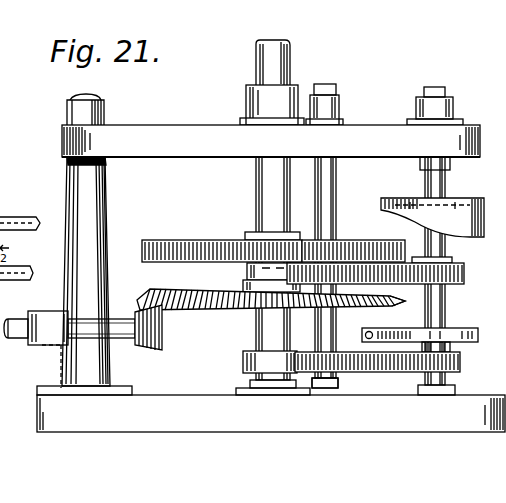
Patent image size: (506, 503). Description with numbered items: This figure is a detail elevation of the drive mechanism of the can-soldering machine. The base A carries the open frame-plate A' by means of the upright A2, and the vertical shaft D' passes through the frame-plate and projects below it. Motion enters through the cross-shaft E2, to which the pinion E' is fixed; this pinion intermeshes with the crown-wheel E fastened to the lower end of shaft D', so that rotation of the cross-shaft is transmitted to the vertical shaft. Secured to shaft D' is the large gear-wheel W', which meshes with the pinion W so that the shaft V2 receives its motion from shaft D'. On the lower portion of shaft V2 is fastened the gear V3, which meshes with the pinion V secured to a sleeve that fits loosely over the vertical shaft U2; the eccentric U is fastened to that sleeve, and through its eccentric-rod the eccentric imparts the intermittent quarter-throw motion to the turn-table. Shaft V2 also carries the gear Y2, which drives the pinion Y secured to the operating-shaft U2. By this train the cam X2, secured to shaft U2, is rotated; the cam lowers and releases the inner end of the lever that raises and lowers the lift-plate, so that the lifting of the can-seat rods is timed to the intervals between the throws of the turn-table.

The base A is at (271, 427).
The open frame-plate A' is at (271, 125).
The upright A2 is at (108, 201).
The vertical shaft D' is at (256, 217).
The crown-wheel E is at (271, 288).
The pinion E' is at (160, 336).
The cross-shaft E2 is at (13, 336).
The eccentric U is at (450, 332).
The vertical shaft U2 is at (432, 88).
The pinion V is at (460, 365).
The shaft V2 is at (326, 83).
The gear V3 is at (372, 367).
The pinion W is at (353, 239).
The large gear-wheel W' is at (222, 238).
The cam X2 is at (454, 202).
The pinion Y is at (452, 269).
The gear Y2 is at (381, 284).